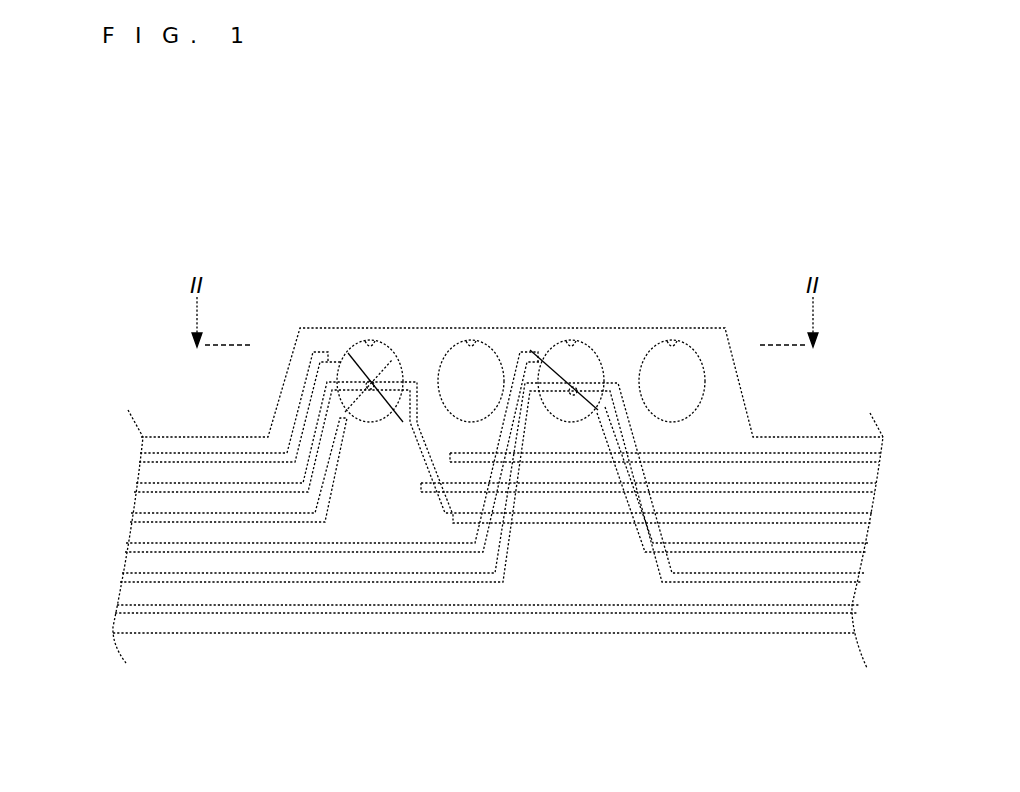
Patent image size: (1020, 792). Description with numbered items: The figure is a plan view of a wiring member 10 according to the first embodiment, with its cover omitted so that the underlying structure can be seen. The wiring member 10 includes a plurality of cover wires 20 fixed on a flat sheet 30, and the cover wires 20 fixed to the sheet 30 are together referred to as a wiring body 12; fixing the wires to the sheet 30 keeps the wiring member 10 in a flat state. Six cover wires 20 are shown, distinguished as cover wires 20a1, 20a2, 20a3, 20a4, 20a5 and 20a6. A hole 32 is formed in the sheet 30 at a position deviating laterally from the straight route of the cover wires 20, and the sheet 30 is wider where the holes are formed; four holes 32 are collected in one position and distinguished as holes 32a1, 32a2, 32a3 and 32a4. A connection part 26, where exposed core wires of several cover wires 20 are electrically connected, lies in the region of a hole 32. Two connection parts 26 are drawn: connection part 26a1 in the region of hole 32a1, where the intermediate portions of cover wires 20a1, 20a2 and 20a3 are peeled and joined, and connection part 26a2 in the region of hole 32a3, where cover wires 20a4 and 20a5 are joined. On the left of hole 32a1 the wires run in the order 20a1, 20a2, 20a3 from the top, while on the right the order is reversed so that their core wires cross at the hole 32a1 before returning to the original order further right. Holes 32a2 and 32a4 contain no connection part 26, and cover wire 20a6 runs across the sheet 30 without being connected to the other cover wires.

The wiring member 10 is at (256, 158).
The wiring body 12 is at (600, 695).
The cover wire 20 is at (579, 615).
The sheet 30 is at (530, 634).
The cover wire 20a1 is at (142, 456).
The cover wire 20a2 is at (138, 488).
The cover wire 20a3 is at (134, 518).
The cover wire 20a4 is at (130, 548).
The cover wire 20a5 is at (126, 578).
The cover wire 20a6 is at (118, 609).
The hole 32 is at (509, 333).
The hole 32a1 is at (353, 347).
The hole 32a2 is at (475, 347).
The hole 32a3 is at (582, 347).
The hole 32a4 is at (683, 347).
The connection part 26 is at (505, 323).
The connection part 26a1 is at (371, 380).
The connection part 26a2 is at (575, 387).